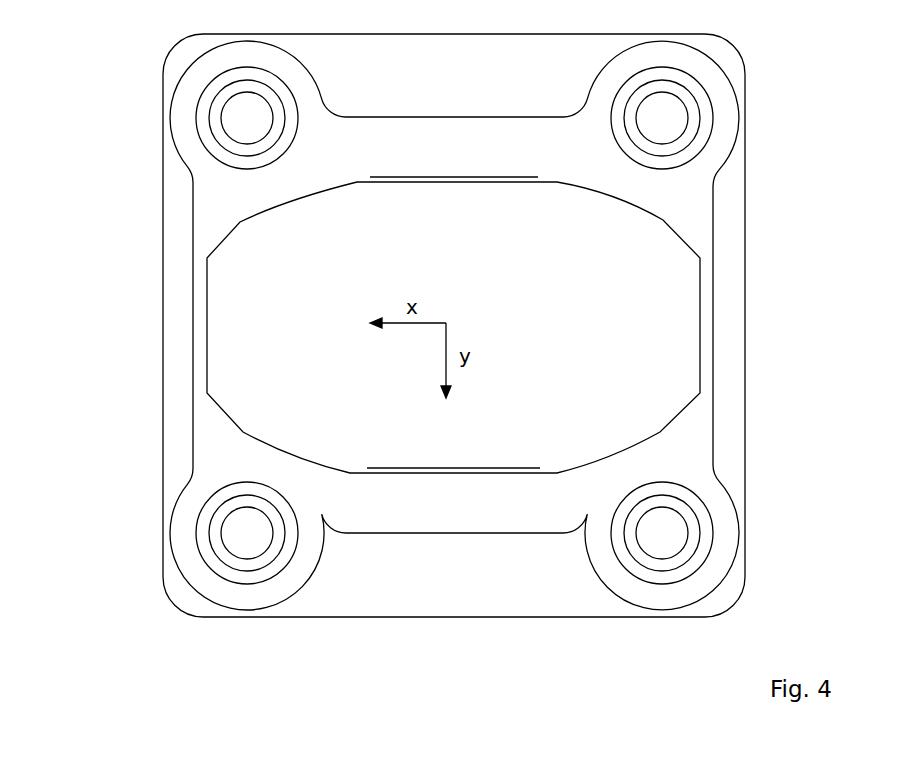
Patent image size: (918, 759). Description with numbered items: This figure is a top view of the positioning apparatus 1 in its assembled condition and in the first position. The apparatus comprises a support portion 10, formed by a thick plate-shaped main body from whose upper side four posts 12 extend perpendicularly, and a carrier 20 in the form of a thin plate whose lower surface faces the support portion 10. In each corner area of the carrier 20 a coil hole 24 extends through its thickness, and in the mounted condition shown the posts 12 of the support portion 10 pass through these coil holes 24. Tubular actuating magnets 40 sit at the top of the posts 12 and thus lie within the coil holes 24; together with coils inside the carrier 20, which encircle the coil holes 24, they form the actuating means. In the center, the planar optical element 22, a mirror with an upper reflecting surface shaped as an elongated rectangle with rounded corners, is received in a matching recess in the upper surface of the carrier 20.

The positioning apparatus 1 is at (147, 635).
The support portion 10 is at (148, 422).
The posts 12 is at (230, 120).
The carrier 20 is at (210, 207).
The optical element 22 is at (275, 345).
The coil hole 24 is at (688, 83).
The actuating magnets 40 is at (220, 90).